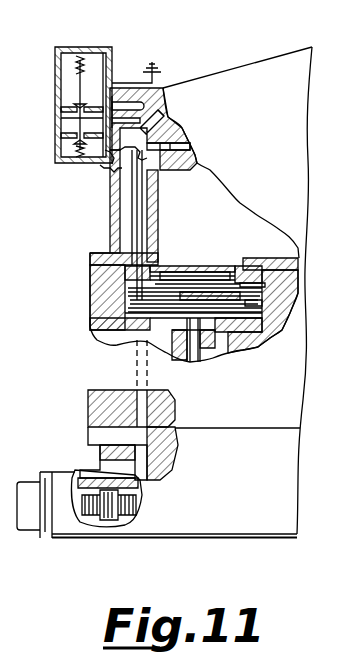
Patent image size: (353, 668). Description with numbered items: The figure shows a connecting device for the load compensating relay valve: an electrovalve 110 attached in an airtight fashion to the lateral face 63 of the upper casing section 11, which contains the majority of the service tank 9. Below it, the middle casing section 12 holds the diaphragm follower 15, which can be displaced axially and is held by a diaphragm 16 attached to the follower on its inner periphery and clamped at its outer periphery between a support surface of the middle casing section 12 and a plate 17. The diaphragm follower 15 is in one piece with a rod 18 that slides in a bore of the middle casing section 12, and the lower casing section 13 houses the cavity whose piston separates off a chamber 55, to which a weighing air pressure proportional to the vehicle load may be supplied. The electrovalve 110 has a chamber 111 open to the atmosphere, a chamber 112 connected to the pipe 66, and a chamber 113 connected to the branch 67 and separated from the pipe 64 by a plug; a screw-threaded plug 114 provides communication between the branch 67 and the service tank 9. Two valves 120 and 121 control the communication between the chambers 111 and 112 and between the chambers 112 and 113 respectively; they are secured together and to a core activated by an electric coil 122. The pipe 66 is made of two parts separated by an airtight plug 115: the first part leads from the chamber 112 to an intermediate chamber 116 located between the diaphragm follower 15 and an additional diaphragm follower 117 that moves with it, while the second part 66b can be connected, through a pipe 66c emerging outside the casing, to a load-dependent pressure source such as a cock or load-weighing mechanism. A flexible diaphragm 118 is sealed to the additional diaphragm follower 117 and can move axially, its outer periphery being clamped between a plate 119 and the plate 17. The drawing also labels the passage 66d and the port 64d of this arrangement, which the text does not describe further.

The service tank 9 is at (182, 292).
The upper casing section 11 is at (155, 100).
The middle casing section 12 is at (100, 404).
The lower casing section 13 is at (100, 457).
The diaphragm follower 15 is at (228, 318).
The diaphragm 16 is at (293, 317).
The plate 17 is at (272, 271).
The rod 18 is at (198, 340).
The chamber 55 is at (93, 518).
The lateral face 63 is at (110, 158).
The pipe 64 is at (180, 146).
The bore port 64d is at (165, 142).
The pipe 66 is at (168, 113).
The pipe part 66b is at (165, 458).
The pipe 66c is at (100, 440).
The passage 66d is at (147, 232).
The branch of pipe 67 is at (128, 150).
The electrovalve 110 is at (93, 46).
The chamber 111 is at (62, 102).
The chamber 112 is at (65, 122).
The chamber 113 is at (68, 158).
The screw-threaded plug 114 is at (114, 168).
The airtight plug 115 is at (168, 410).
The intermediate chamber 116 is at (258, 302).
The additional diaphragm follower 117 is at (188, 290).
The diaphragm 118 is at (178, 285).
The plate 119 is at (267, 283).
The valve 120 is at (78, 83).
The valve 121 is at (62, 142).
The electric coil 122 is at (128, 62).